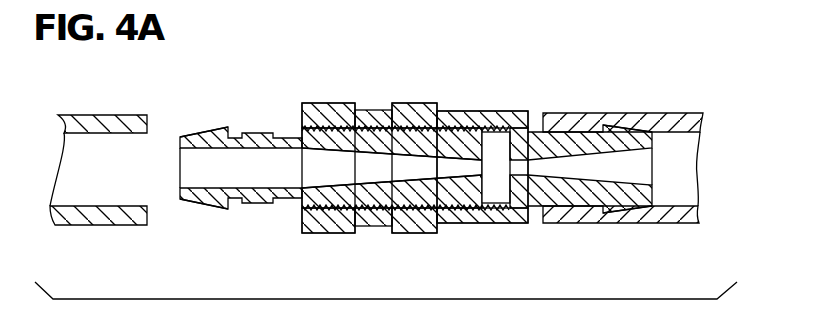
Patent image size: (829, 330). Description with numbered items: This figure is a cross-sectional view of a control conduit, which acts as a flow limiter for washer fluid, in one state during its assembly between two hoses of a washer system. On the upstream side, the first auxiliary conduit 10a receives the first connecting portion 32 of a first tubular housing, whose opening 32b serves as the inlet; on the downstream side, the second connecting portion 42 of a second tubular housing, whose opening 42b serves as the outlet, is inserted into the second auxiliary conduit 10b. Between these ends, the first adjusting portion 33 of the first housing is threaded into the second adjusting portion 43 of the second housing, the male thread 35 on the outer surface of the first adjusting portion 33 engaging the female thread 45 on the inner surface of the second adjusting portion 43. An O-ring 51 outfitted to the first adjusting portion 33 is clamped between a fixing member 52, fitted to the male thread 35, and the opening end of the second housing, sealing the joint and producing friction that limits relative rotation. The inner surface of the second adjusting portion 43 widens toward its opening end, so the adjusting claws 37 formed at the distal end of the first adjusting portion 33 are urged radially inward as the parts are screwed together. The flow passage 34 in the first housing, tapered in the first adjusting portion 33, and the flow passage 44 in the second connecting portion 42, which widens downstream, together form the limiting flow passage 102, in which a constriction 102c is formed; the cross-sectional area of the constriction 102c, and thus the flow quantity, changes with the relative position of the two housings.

The first auxiliary conduit 10a is at (86, 115).
The second auxiliary conduit 10b is at (682, 113).
The first connecting portion 32 is at (190, 136).
The opening 32b is at (212, 152).
The flow passage 34 is at (210, 185).
The fixing member 52 is at (323, 103).
The O-ring 51 is at (370, 110).
The first adjusting portion 33 is at (423, 124).
The second adjusting portion 43 is at (463, 111).
The female thread 45 is at (509, 137).
The male thread 35 is at (425, 211).
The adjusting claw 37 is at (478, 196).
The limiting flow passage 102 is at (335, 174).
The constriction 102c is at (474, 168).
The second connecting portion 42 is at (630, 127).
The opening 42b is at (630, 152).
The flow passage 44 is at (620, 192).